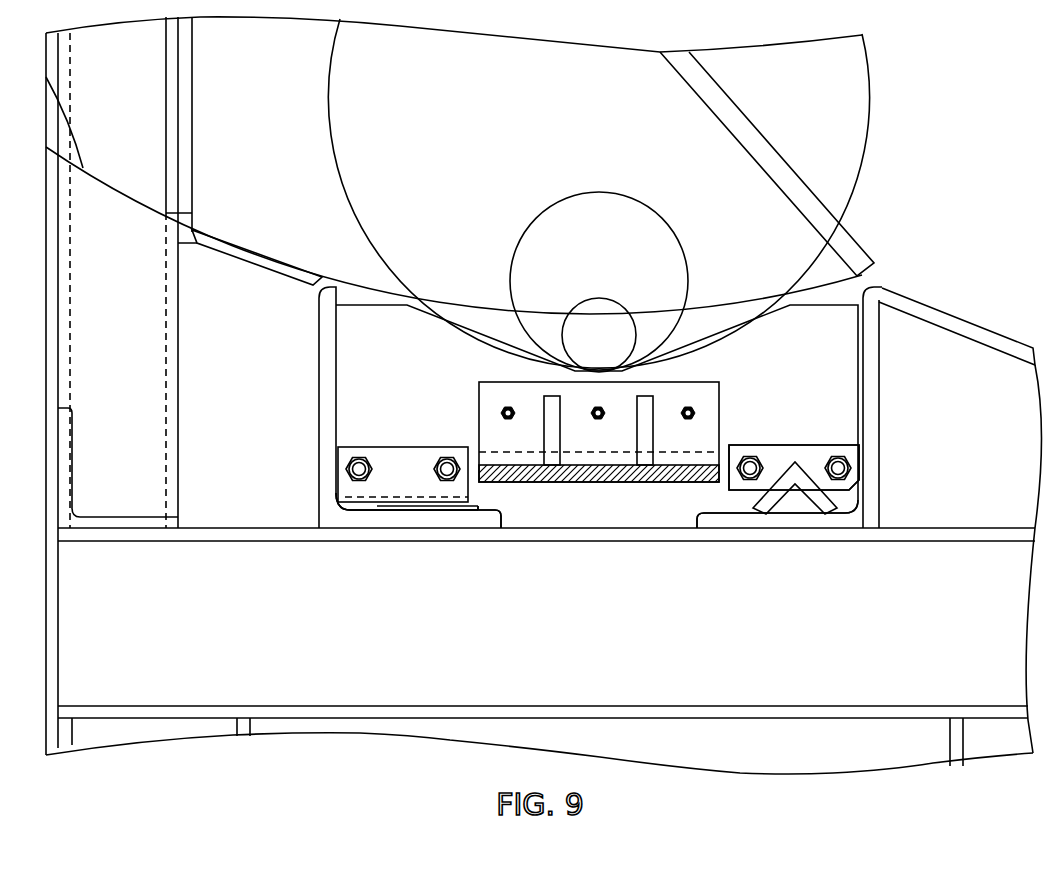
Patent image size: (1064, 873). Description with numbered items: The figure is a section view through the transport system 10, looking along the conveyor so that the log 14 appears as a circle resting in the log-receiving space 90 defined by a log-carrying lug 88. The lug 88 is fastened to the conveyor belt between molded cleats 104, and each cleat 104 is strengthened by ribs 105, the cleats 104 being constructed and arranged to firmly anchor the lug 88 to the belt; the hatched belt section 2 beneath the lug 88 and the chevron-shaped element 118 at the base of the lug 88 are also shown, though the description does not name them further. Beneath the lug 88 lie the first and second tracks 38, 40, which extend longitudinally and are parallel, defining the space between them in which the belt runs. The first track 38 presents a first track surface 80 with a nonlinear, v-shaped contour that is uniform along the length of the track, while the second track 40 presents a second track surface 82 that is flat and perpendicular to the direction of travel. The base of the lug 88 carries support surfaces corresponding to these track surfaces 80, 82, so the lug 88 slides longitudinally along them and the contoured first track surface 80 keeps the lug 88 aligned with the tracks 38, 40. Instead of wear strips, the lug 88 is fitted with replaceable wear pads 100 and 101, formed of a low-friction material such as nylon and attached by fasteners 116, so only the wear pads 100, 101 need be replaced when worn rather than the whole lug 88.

The support plate 2 is at (660, 470).
The log transport system 10 is at (694, 410).
The log 14 is at (609, 253).
The first track 38 is at (828, 510).
The second track 40 is at (375, 507).
The first track surface 80 is at (811, 469).
The second track surface 82 is at (410, 503).
The lug 88 is at (381, 363).
The log-receiving space 90 is at (689, 336).
The wear pad 100 is at (405, 452).
The wear pad 101 is at (766, 451).
The cleat 104 is at (692, 391).
The rib 105 is at (646, 399).
The fastener 116 is at (445, 460).
The angle bracket 118 is at (800, 452).